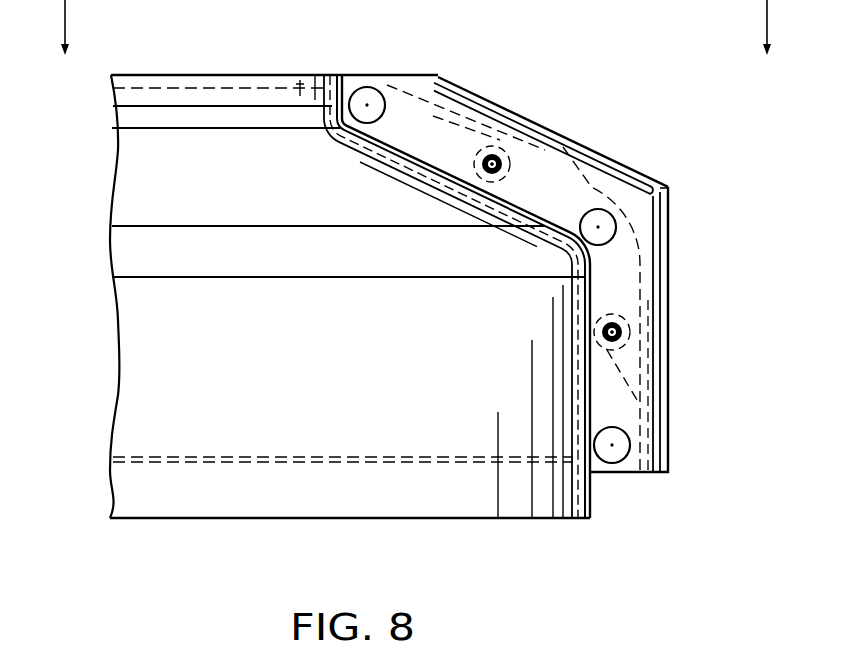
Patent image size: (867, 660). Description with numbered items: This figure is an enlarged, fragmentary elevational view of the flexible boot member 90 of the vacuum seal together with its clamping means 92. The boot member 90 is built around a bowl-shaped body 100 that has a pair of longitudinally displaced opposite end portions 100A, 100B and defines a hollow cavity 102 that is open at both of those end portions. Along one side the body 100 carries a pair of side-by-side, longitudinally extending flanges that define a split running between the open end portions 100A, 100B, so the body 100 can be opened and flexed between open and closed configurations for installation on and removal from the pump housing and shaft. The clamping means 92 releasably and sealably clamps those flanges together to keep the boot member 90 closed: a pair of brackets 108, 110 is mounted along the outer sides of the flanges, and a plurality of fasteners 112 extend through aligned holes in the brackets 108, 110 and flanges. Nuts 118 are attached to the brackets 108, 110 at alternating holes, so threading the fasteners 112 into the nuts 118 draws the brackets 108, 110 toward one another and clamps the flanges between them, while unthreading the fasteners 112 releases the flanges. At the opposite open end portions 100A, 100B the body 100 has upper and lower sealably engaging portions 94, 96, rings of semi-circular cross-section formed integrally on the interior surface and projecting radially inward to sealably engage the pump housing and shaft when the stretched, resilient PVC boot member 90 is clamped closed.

The flexible boot member 90 is at (297, 72).
The clamping means 92 is at (575, 112).
The upper sealably engaging portion 94 is at (238, 90).
The lower sealably engaging portion 96 is at (213, 463).
The bowl-shaped body 100 is at (443, 522).
The upper end portion 100A is at (227, 73).
The lower end portion 100B is at (247, 519).
The hollow cavity 102 is at (327, 395).
The bracket 108 is at (671, 284).
The bracket 110 is at (658, 422).
The fasteners 112 is at (369, 100).
The nuts 118 is at (493, 155).